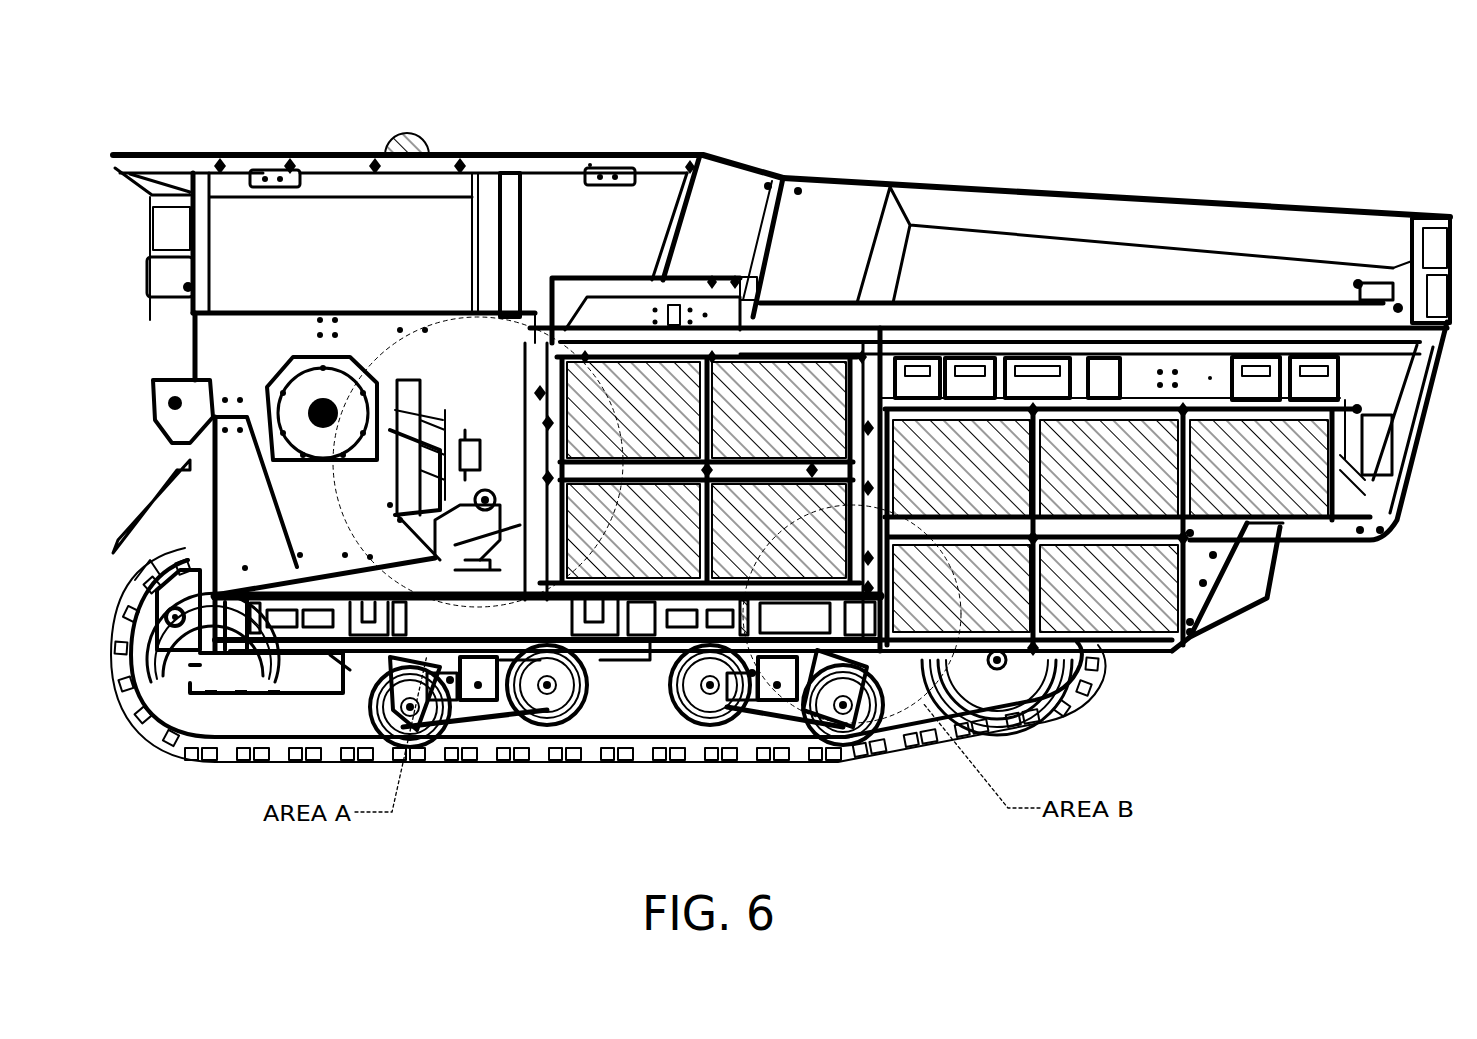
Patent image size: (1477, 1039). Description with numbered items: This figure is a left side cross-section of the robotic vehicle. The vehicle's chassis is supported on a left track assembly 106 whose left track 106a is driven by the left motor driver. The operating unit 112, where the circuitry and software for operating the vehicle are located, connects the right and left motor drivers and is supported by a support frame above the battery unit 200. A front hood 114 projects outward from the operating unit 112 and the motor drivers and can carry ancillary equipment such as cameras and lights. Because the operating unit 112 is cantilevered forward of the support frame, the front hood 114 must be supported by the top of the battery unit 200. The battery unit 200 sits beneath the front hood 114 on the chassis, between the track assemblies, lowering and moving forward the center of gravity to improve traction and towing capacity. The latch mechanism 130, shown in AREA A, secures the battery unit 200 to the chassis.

The operating unit 112 is at (322, 155).
The front hood 114 is at (1150, 200).
The latch mechanism 130 is at (525, 485).
The left track assembly 106 is at (1102, 680).
The left track 106a is at (747, 765).
The battery unit 200 is at (1263, 600).